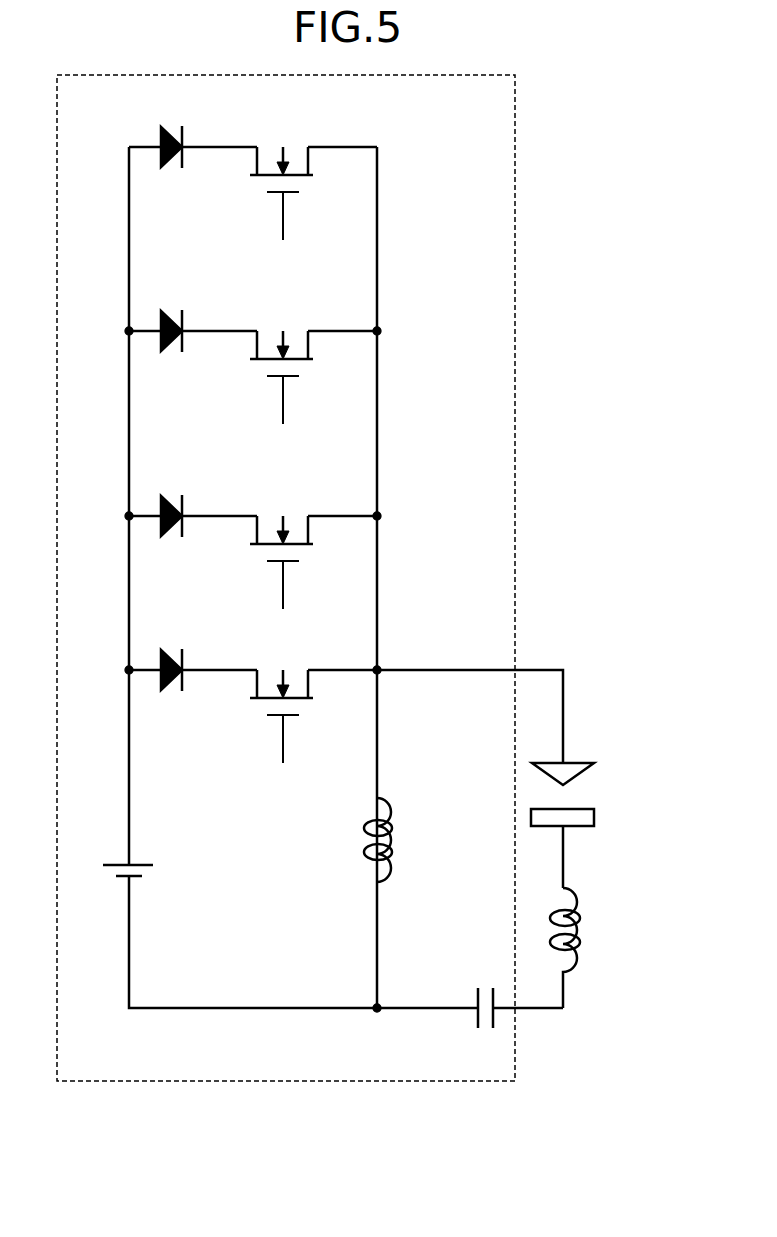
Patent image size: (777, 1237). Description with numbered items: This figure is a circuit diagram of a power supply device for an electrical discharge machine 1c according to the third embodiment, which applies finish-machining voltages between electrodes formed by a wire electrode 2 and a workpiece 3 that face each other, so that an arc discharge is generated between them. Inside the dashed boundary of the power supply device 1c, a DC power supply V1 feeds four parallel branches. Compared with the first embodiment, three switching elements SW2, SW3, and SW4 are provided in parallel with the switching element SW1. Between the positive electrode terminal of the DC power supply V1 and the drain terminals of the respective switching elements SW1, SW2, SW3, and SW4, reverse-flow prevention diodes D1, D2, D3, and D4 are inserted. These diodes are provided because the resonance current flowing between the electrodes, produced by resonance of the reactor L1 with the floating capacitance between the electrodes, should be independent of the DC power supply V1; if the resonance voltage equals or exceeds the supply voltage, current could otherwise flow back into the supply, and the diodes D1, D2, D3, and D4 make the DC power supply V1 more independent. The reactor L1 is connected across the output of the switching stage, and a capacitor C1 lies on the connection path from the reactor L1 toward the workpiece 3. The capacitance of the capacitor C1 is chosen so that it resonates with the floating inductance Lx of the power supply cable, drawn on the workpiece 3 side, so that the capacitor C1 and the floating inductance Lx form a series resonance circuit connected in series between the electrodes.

The power supply device for an electrical discharge machine 1c is at (250, 1082).
The wire electrode 2 is at (575, 760).
The workpiece 3 is at (596, 815).
The reverse-flow prevention diode D1 is at (169, 651).
The reverse-flow prevention diode D2 is at (169, 498).
The reverse-flow prevention diode D3 is at (169, 313).
The reverse-flow prevention diode D4 is at (169, 126).
The switching element SW1 is at (293, 669).
The switching element SW2 is at (293, 515).
The switching element SW3 is at (293, 330).
The switching element SW4 is at (293, 146).
The DC power supply V1 is at (143, 862).
The reactor L1 is at (364, 826).
The capacitor C1 is at (472, 1014).
The floating inductance Lx is at (582, 930).